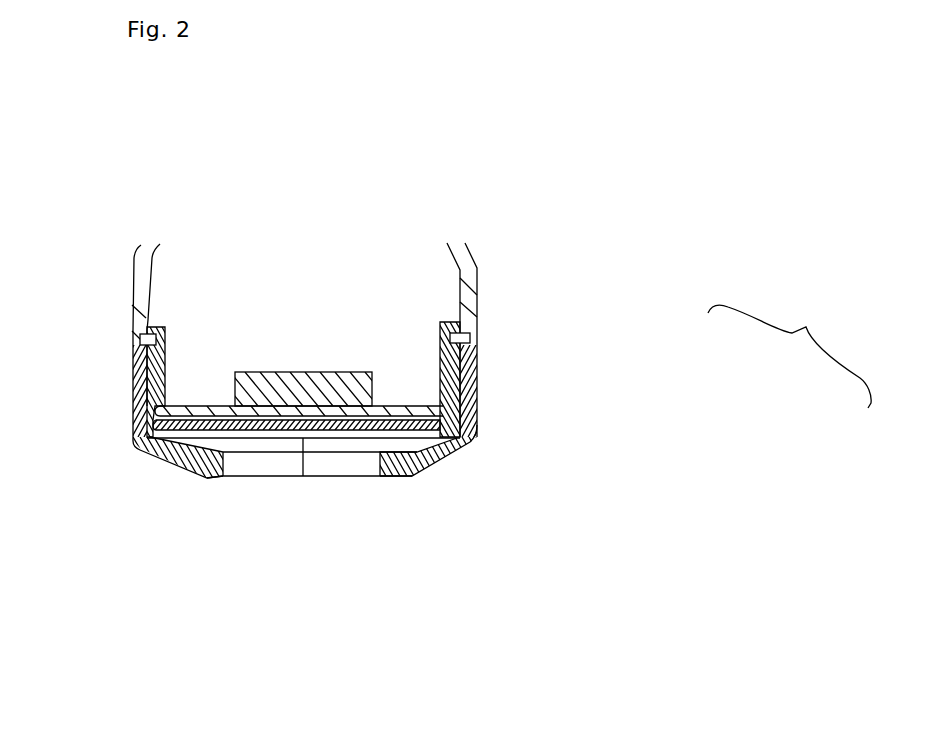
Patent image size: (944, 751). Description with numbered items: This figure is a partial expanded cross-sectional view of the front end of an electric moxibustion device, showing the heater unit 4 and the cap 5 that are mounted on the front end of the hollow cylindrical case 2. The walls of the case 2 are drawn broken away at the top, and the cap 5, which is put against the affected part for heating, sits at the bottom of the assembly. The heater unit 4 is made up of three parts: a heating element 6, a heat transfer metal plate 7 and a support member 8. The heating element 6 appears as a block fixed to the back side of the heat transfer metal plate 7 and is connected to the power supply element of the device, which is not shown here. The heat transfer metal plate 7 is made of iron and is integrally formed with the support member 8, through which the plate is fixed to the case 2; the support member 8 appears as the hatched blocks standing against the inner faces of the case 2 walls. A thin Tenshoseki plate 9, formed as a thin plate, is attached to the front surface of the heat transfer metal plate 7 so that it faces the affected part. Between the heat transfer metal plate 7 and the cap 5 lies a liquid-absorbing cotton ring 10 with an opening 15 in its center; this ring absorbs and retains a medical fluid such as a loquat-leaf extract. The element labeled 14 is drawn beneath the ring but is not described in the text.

The case 2 is at (478, 291).
The heater unit 4 is at (803, 341).
The cap 5 is at (133, 440).
The heating element 6 is at (377, 381).
The heat transfer metal plate 7 is at (393, 405).
The support member 8 is at (477, 365).
The thin Tenshoseki plate 9 is at (312, 425).
The liquid-absorbing cotton ring 10 is at (420, 462).
The bottom plate 14 is at (250, 477).
The opening 15 is at (303, 476).